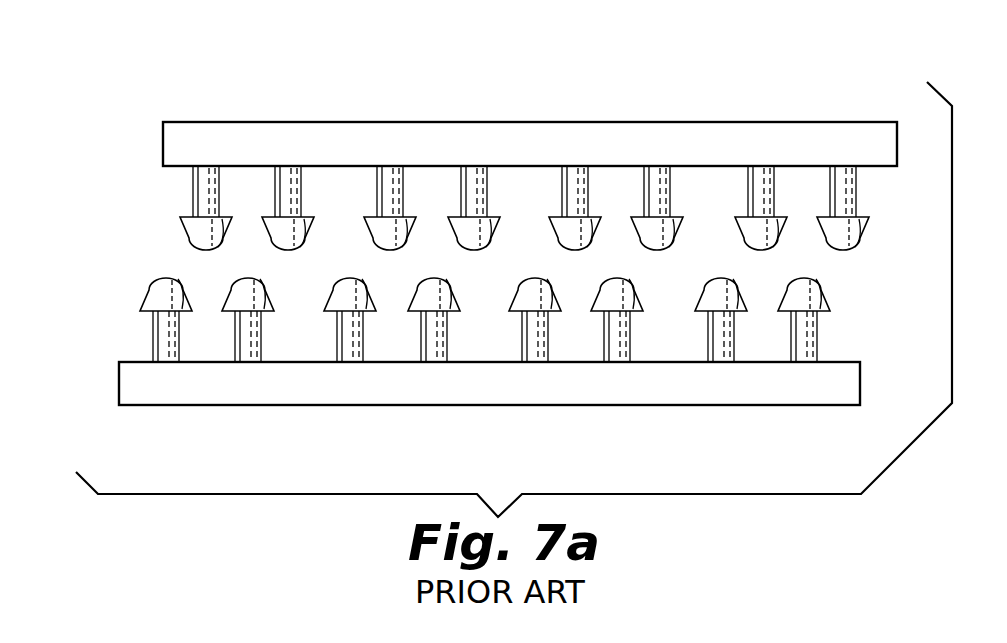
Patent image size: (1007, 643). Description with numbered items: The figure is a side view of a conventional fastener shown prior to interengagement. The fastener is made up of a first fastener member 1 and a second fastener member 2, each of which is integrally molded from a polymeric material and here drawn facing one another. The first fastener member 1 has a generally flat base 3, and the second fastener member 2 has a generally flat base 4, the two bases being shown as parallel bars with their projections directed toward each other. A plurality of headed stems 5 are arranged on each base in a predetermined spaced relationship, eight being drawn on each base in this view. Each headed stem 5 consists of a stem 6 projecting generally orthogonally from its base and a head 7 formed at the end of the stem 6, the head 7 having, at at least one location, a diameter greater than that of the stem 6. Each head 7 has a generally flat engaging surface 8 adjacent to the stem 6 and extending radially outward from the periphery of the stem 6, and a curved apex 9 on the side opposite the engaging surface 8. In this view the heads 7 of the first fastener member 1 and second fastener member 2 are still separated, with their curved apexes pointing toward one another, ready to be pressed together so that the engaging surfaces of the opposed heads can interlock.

The first fastener member 1 is at (464, 379).
The second fastener member 2 is at (527, 113).
The base 3 is at (746, 392).
The base 4 is at (613, 121).
The headed stem 5 is at (855, 264).
The stem 6 is at (403, 187).
The head 7 is at (805, 302).
The engaging surface 8 is at (190, 221).
The curved apex 9 is at (160, 276).